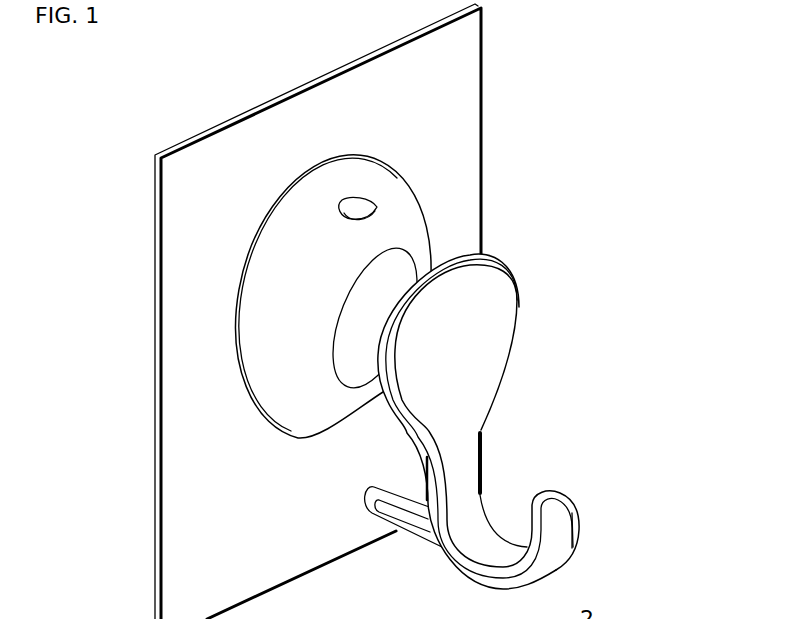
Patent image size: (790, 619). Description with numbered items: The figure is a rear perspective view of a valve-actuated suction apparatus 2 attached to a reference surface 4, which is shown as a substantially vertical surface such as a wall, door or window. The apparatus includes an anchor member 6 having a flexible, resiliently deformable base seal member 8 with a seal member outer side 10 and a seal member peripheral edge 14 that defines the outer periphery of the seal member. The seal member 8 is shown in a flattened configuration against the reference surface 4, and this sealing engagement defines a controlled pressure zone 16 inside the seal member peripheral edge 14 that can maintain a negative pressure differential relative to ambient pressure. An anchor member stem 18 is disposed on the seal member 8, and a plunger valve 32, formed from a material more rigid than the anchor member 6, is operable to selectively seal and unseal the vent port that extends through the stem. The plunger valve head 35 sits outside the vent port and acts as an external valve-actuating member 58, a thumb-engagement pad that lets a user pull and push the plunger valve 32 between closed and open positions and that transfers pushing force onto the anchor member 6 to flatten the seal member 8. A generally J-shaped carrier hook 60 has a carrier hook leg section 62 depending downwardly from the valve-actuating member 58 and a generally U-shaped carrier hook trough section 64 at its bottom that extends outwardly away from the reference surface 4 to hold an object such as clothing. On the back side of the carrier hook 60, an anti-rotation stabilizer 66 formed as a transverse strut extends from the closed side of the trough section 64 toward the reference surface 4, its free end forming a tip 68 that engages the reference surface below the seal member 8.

The valve-actuated suction apparatus 2 is at (521, 370).
The reference surface 4 is at (268, 84).
The anchor member 6 is at (272, 360).
The base seal member 8 is at (263, 340).
The seal member outer side 10 is at (287, 431).
The seal member peripheral edge 14 is at (253, 258).
The controlled pressure zone 16 is at (355, 208).
The anchor member stem 18 is at (382, 377).
The plunger valve 32 is at (521, 406).
The plunger valve head 35 is at (485, 323).
The external valve-actuating member 58 is at (472, 360).
The carrier hook 60 is at (562, 477).
The carrier hook leg section 62 is at (457, 477).
The carrier hook trough section 64 is at (495, 545).
The anti-rotation stabilizer 66 is at (377, 552).
The tip 68 is at (363, 502).